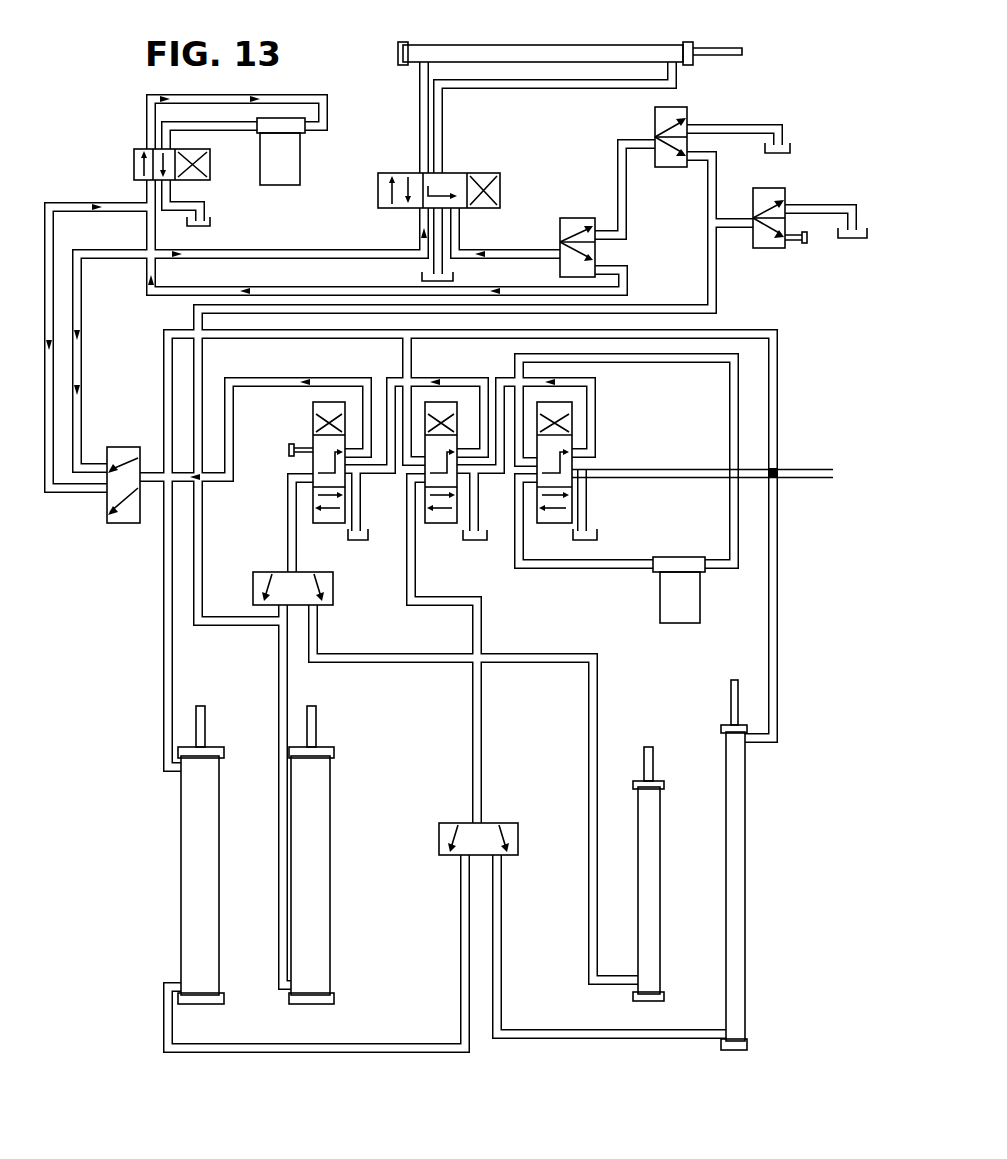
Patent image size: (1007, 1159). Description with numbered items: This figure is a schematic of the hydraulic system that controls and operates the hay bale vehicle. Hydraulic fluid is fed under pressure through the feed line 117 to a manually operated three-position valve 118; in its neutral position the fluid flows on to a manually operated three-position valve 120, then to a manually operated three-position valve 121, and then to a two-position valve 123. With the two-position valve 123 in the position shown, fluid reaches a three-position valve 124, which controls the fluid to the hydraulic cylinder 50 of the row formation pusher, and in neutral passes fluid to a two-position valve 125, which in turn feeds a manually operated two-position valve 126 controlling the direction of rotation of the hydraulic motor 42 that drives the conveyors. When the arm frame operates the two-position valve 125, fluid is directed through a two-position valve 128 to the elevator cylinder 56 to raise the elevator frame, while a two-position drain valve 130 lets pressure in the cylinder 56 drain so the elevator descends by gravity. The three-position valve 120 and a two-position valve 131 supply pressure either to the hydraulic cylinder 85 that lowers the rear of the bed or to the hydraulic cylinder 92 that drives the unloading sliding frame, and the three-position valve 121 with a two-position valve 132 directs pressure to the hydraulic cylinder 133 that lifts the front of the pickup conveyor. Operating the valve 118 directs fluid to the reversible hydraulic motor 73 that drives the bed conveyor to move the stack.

The hydraulic cylinder 50 is at (541, 45).
The hydraulic motor 42 is at (300, 165).
The two-position valve 126 is at (134, 162).
The three-position valve 124 is at (452, 172).
The two-position valve 125 is at (562, 218).
The two-position valve 128 is at (655, 115).
The two-position drain valve 130 is at (768, 248).
The two-position valve 123 is at (124, 523).
The three-position valve 121 is at (313, 412).
The three-position valve 120 is at (435, 408).
The three-position valve 118 is at (580, 435).
The feed line 117 is at (680, 470).
The two-position valve 132 is at (333, 578).
The reversible hydraulic motor 73 is at (700, 605).
The two-position valve 131 is at (518, 830).
The hydraulic cylinder 133 is at (655, 865).
The hydraulic cylinder 92 is at (745, 855).
The hydraulic cylinder 85 is at (219, 922).
The hydraulic cylinder 56 is at (330, 878).